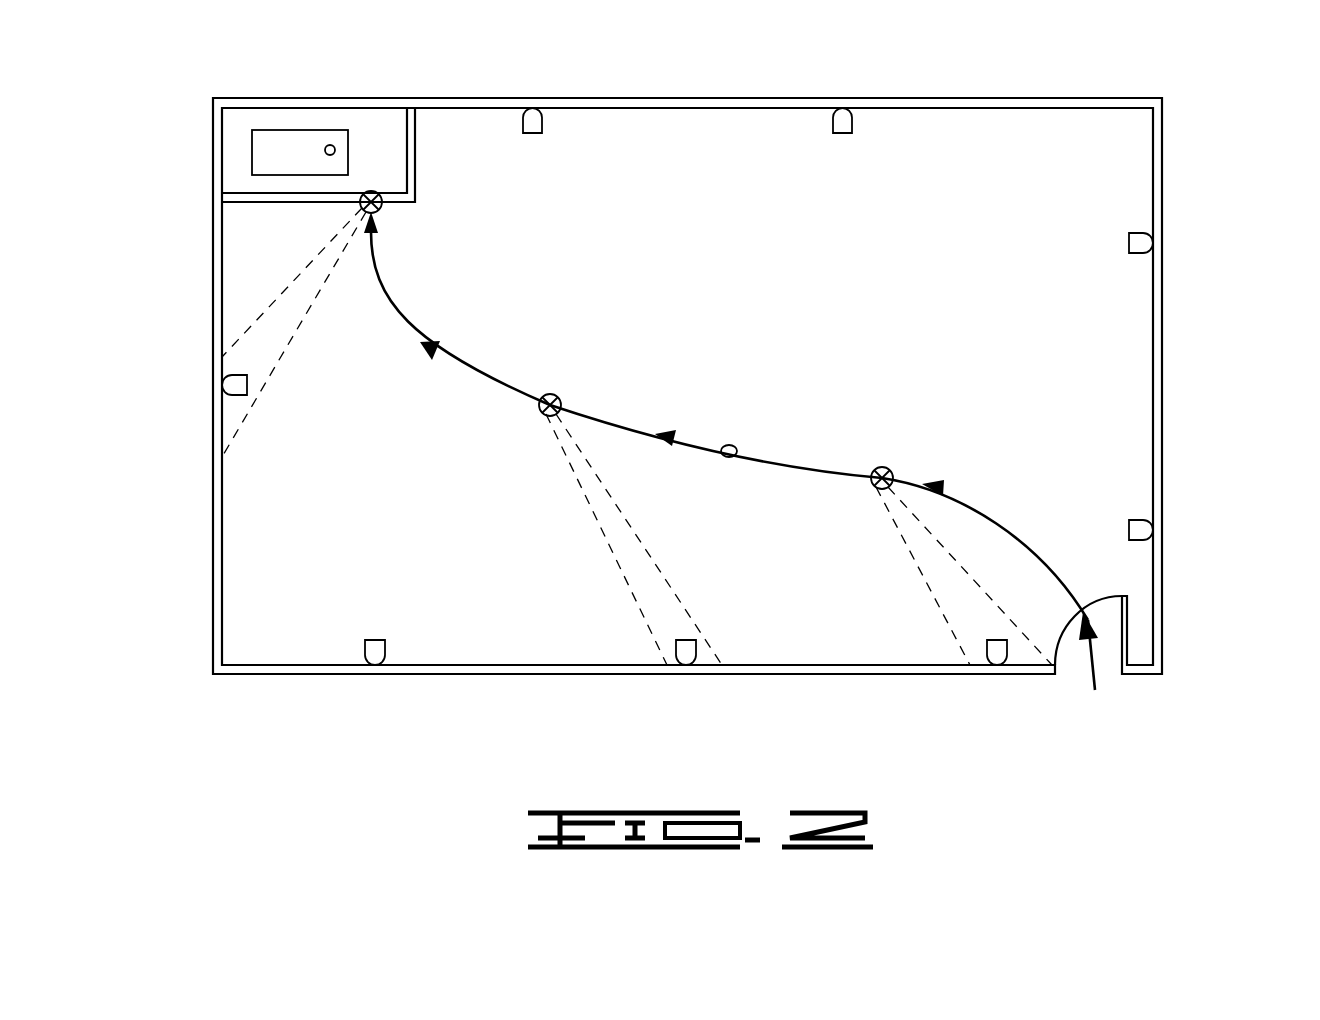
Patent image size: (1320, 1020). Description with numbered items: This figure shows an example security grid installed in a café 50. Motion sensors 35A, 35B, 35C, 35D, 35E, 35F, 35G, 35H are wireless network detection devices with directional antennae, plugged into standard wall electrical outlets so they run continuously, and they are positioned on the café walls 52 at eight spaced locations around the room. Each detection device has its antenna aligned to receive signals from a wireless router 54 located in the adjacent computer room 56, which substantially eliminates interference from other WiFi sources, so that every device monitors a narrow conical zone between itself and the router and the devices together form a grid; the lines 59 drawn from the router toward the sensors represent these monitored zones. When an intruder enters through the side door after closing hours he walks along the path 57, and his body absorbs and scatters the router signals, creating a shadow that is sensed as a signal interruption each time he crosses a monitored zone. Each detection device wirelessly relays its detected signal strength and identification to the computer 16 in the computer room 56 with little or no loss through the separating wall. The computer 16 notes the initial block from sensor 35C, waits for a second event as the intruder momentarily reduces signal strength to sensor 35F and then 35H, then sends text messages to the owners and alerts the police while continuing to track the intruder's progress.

The café 50 is at (756, 359).
The café walls 52 is at (1062, 97).
The computer room 56 is at (226, 112).
The computer 16 is at (299, 159).
The wireless router 54 is at (330, 144).
The motion sensor 35A is at (533, 115).
The motion sensor 35B is at (843, 115).
The motion sensor 35C is at (1148, 243).
The motion sensor 35D is at (1148, 530).
The motion sensor 35E is at (997, 655).
The motion sensor 35F is at (686, 655).
The motion sensor 35G is at (372, 658).
The motion sensor 35H is at (236, 385).
The path 57 is at (736, 446).
The sensor detection lines 59 is at (281, 331).